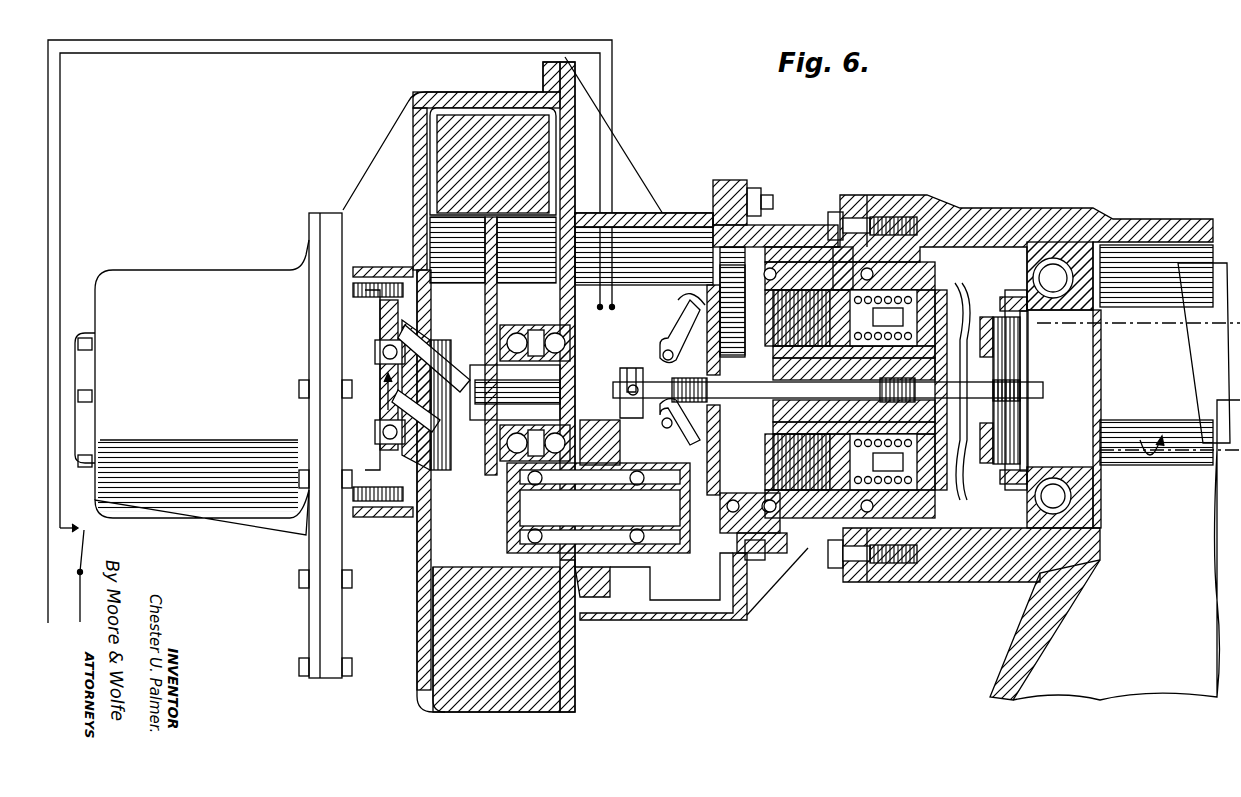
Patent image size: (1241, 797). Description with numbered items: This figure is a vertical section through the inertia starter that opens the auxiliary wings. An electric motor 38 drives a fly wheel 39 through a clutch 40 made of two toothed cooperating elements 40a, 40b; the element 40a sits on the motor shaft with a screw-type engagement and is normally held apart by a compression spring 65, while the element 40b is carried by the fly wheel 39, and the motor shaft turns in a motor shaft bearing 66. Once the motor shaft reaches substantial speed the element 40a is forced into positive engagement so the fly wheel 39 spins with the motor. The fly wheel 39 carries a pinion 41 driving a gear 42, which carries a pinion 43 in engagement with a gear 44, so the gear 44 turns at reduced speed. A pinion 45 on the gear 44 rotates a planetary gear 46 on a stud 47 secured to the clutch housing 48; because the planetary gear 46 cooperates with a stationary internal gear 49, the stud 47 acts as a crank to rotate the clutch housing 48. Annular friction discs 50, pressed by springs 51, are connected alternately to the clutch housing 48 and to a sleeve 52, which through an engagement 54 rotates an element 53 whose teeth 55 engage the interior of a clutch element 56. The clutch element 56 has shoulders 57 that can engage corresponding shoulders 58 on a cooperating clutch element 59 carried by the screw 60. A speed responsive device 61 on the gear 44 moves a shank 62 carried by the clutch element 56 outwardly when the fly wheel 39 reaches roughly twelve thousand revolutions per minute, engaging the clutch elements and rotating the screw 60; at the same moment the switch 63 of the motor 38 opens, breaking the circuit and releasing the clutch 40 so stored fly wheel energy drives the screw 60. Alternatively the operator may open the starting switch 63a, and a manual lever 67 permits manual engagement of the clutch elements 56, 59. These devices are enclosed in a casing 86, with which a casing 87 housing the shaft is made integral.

The electric motor 38 is at (230, 279).
The fly wheel 39 is at (470, 112).
The clutch 40 is at (440, 470).
The clutch element 40a is at (410, 490).
The clutch element 40b is at (455, 485).
The pinion 41 is at (578, 445).
The gear 42 is at (596, 428).
The pinion 43 is at (678, 545).
The gear 44 is at (670, 305).
The pinion 45 is at (710, 315).
The planetary gear 46 is at (716, 535).
The stud 47 is at (722, 497).
The clutch housing 48 is at (790, 500).
The stationary internal gear 49 is at (718, 290).
The annular friction discs 50 is at (800, 490).
The springs 51 is at (898, 215).
The sleeve 52 is at (795, 248).
The element 53 is at (940, 425).
The engagement 54 is at (812, 280).
The teeth 55 is at (948, 470).
The clutch element 56 is at (959, 391).
The shoulders 57 is at (985, 405).
The shoulders 58 is at (985, 372).
The clutch element 59 is at (991, 312).
The screw 60 is at (1190, 455).
The speed responsive device 61 is at (667, 345).
The shank 62 is at (828, 390).
The switch 63 is at (92, 547).
The starting switch 63a is at (622, 325).
The compression spring 65 is at (462, 325).
The motor shaft bearing 66 is at (378, 352).
The manual lever 67 is at (630, 368).
The casing 86 is at (1062, 212).
The casing 87 is at (1047, 605).